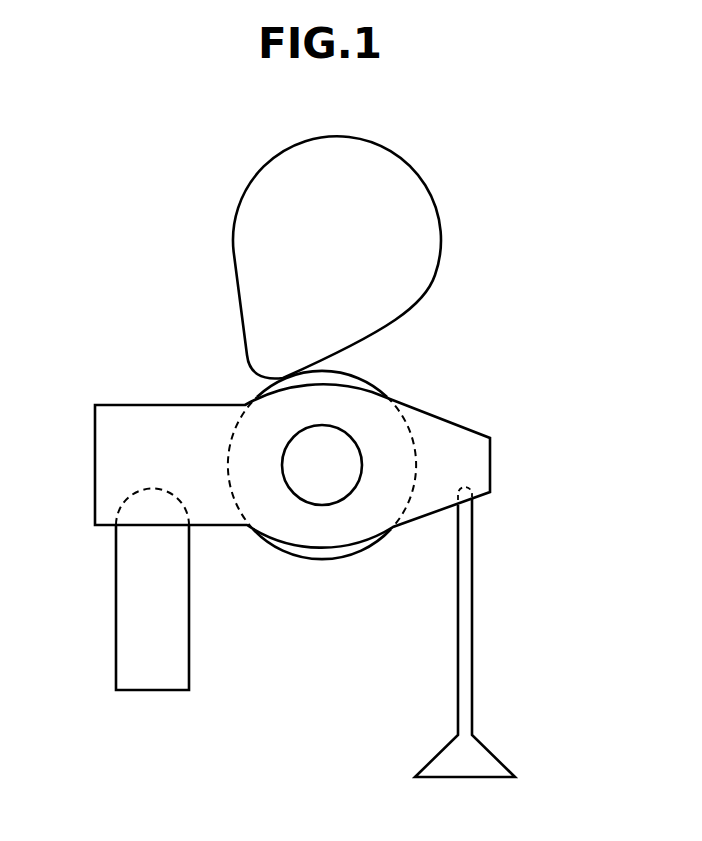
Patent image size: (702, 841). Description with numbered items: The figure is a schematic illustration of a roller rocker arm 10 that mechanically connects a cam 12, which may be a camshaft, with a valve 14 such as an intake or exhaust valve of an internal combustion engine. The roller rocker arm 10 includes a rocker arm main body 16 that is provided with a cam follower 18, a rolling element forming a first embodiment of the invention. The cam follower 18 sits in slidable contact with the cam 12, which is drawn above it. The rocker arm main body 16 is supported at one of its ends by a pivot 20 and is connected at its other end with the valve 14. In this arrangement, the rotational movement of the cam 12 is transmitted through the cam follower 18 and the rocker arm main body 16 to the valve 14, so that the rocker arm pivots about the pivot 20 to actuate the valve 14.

The roller rocker arm 10 is at (422, 409).
The cam 12 is at (426, 233).
The valve 14 is at (467, 640).
The rocker arm main body 16 is at (447, 436).
The cam follower 18 is at (360, 378).
The pivot 20 is at (127, 628).